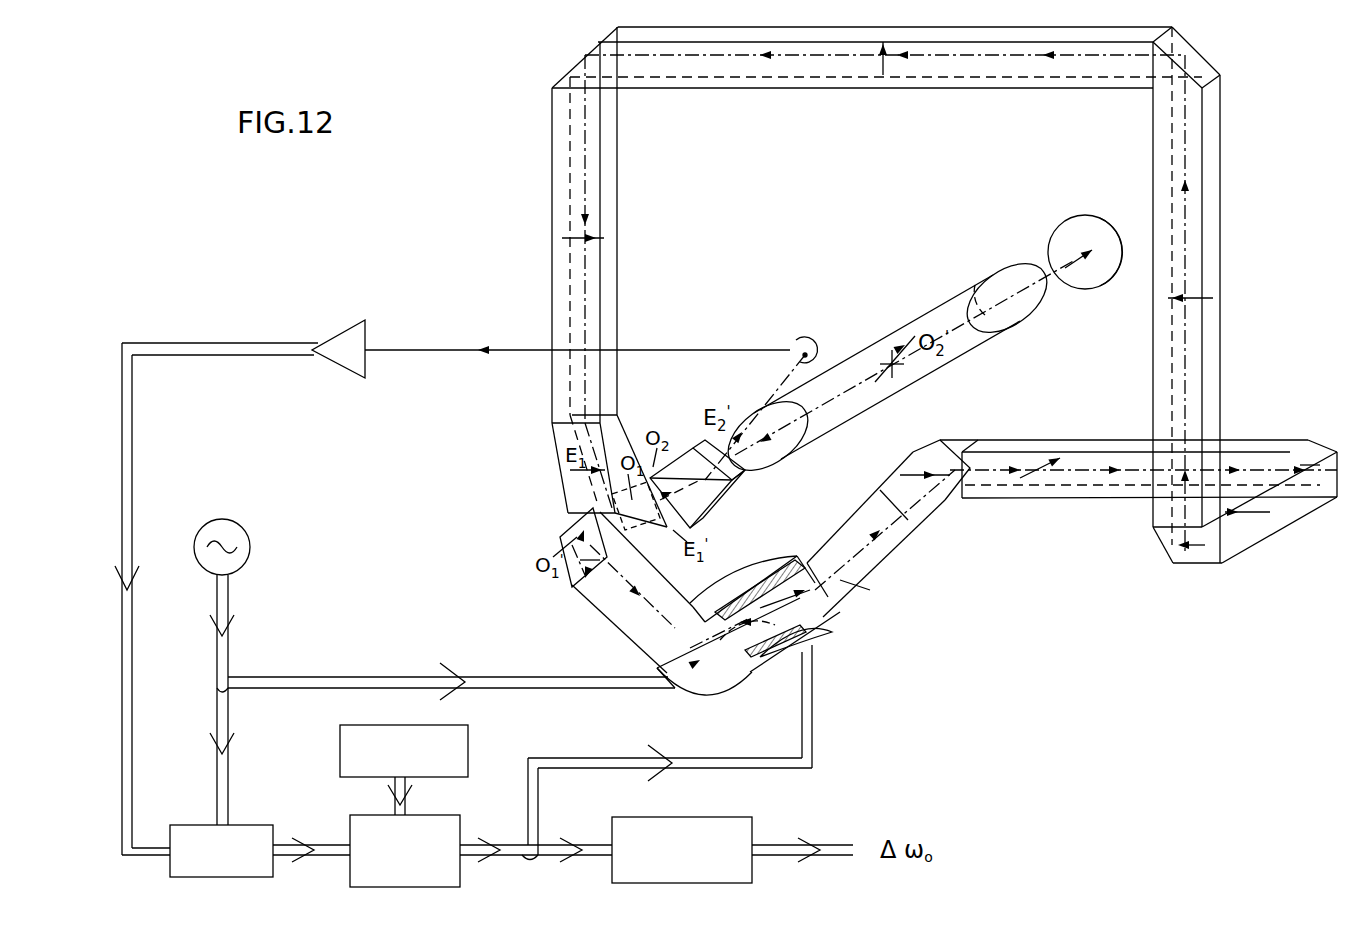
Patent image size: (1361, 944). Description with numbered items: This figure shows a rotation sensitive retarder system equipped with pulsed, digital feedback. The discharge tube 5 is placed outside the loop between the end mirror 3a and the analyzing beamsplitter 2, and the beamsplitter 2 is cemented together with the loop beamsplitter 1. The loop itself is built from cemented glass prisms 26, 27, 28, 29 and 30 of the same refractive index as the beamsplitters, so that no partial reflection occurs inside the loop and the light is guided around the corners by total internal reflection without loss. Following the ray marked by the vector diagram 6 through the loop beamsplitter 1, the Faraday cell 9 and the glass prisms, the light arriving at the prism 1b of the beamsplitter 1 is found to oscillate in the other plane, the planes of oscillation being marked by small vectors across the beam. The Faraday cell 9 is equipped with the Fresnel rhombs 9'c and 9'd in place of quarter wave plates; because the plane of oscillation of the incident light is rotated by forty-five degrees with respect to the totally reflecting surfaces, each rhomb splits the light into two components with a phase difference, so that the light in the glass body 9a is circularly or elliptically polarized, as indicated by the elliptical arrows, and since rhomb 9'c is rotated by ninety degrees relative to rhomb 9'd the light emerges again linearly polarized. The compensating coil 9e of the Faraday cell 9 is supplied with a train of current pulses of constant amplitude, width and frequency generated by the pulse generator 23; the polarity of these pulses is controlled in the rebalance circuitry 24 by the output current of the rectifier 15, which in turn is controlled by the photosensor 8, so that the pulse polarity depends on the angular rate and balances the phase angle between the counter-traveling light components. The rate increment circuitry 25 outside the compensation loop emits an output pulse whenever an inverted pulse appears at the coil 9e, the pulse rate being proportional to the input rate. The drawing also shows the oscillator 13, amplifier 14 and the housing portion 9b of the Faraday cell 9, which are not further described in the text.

The loop beamsplitter 1 is at (568, 515).
The prism of beamsplitter 1 1b is at (555, 437).
The analyzing beamsplitter 2 is at (690, 518).
The end mirror 3a is at (1085, 239).
The discharge tube 5 is at (895, 367).
The vector diagram 6 is at (652, 523).
The photosensor 8 is at (591, 399).
The Faraday cell 9 is at (764, 641).
The glass body of the Faraday cell 9a is at (810, 615).
The detector housing 9b is at (704, 699).
The Fresnel rhomb 9'c is at (629, 592).
The Fresnel rhomb 9'd is at (892, 528).
The compensating coil 9e is at (823, 643).
The oscillator 13 is at (434, 657).
The amplifier 14 is at (240, 587).
The rectifier 15 is at (236, 851).
The pulse generator 23 is at (404, 770).
The rebalance circuitry 24 is at (481, 851).
The rate increment circuitry 25 is at (732, 850).
The glass prism 26 is at (1143, 485).
The glass prism 27 is at (1245, 501).
The glass prism 28 is at (1209, 295).
The glass prism 29 is at (886, 72).
The glass prism 30 is at (601, 225).